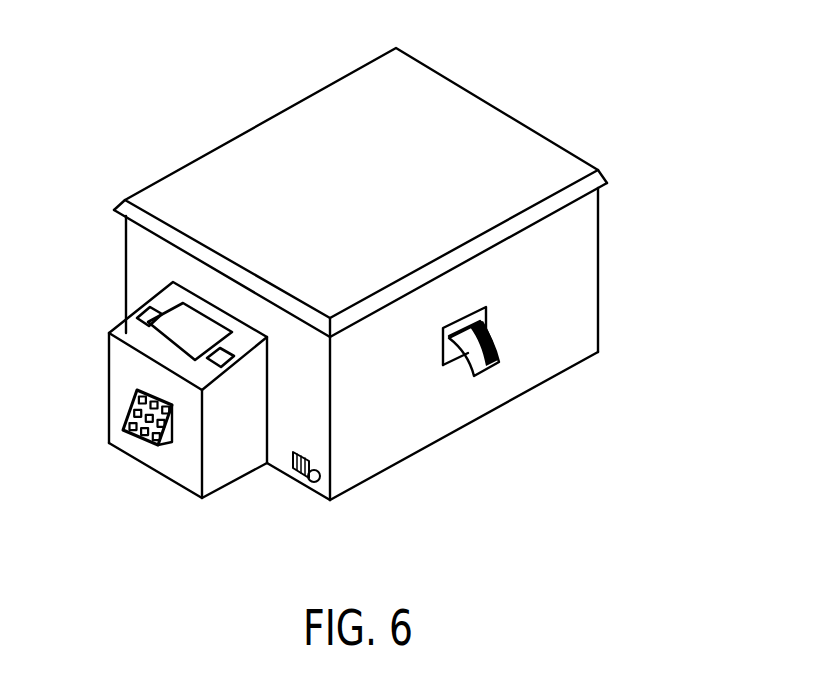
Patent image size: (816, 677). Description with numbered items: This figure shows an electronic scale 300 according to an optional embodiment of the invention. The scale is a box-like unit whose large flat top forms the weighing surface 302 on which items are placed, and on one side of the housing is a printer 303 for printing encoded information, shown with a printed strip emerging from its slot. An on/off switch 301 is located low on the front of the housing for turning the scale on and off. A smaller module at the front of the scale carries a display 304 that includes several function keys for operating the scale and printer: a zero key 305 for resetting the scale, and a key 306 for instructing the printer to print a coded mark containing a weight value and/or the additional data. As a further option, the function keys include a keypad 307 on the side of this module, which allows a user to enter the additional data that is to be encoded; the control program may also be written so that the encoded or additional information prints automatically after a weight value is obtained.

The electronic scale 300 is at (598, 245).
The on/off switch 301 is at (307, 477).
The weighing surface 302 is at (453, 82).
The printer 303 is at (497, 343).
The display 304 is at (158, 342).
The zero key 305 is at (148, 310).
The key 306 is at (230, 363).
The keypad 307 is at (137, 433).